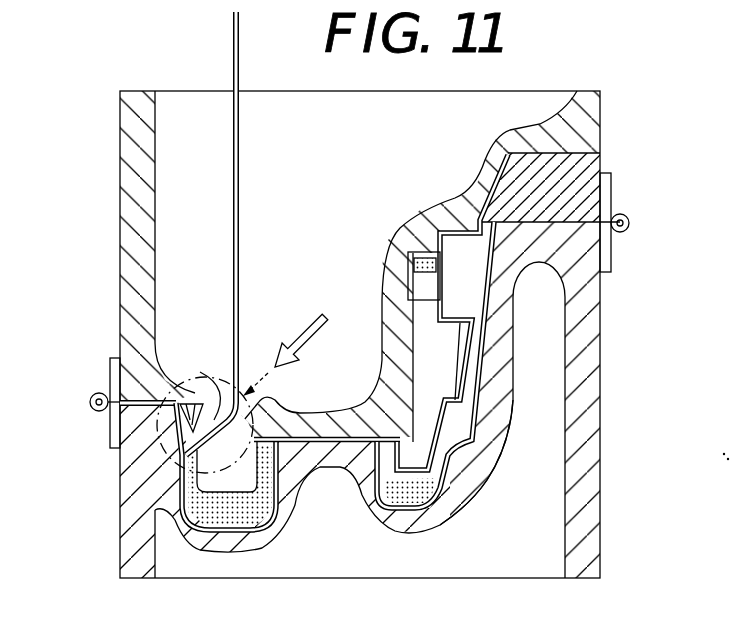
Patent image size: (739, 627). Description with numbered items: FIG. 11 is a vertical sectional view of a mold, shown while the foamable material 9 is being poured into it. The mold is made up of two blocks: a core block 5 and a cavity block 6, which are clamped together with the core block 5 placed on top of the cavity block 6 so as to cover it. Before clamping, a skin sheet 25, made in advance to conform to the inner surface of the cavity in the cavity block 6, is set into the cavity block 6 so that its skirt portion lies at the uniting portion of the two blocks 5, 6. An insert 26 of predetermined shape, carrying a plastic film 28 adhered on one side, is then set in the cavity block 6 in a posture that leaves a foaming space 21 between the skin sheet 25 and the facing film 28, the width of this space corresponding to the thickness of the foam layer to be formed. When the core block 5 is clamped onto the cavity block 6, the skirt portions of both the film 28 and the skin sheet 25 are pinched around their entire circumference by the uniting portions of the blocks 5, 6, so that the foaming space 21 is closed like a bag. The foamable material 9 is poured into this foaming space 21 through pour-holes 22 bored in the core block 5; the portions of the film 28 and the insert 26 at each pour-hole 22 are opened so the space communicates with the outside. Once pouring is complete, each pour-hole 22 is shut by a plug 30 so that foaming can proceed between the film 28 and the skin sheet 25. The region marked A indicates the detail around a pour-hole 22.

The core block 5 is at (100, 253).
The cavity block 6 is at (630, 284).
The foamable material 9 is at (240, 208).
The foaming space 21 is at (180, 400).
The pour-hole 22 is at (210, 396).
The skin sheet 25 is at (478, 435).
The insert 26 is at (408, 288).
The plastic film 28 is at (478, 374).
The plug 30 is at (283, 348).
The detail A is at (152, 472).